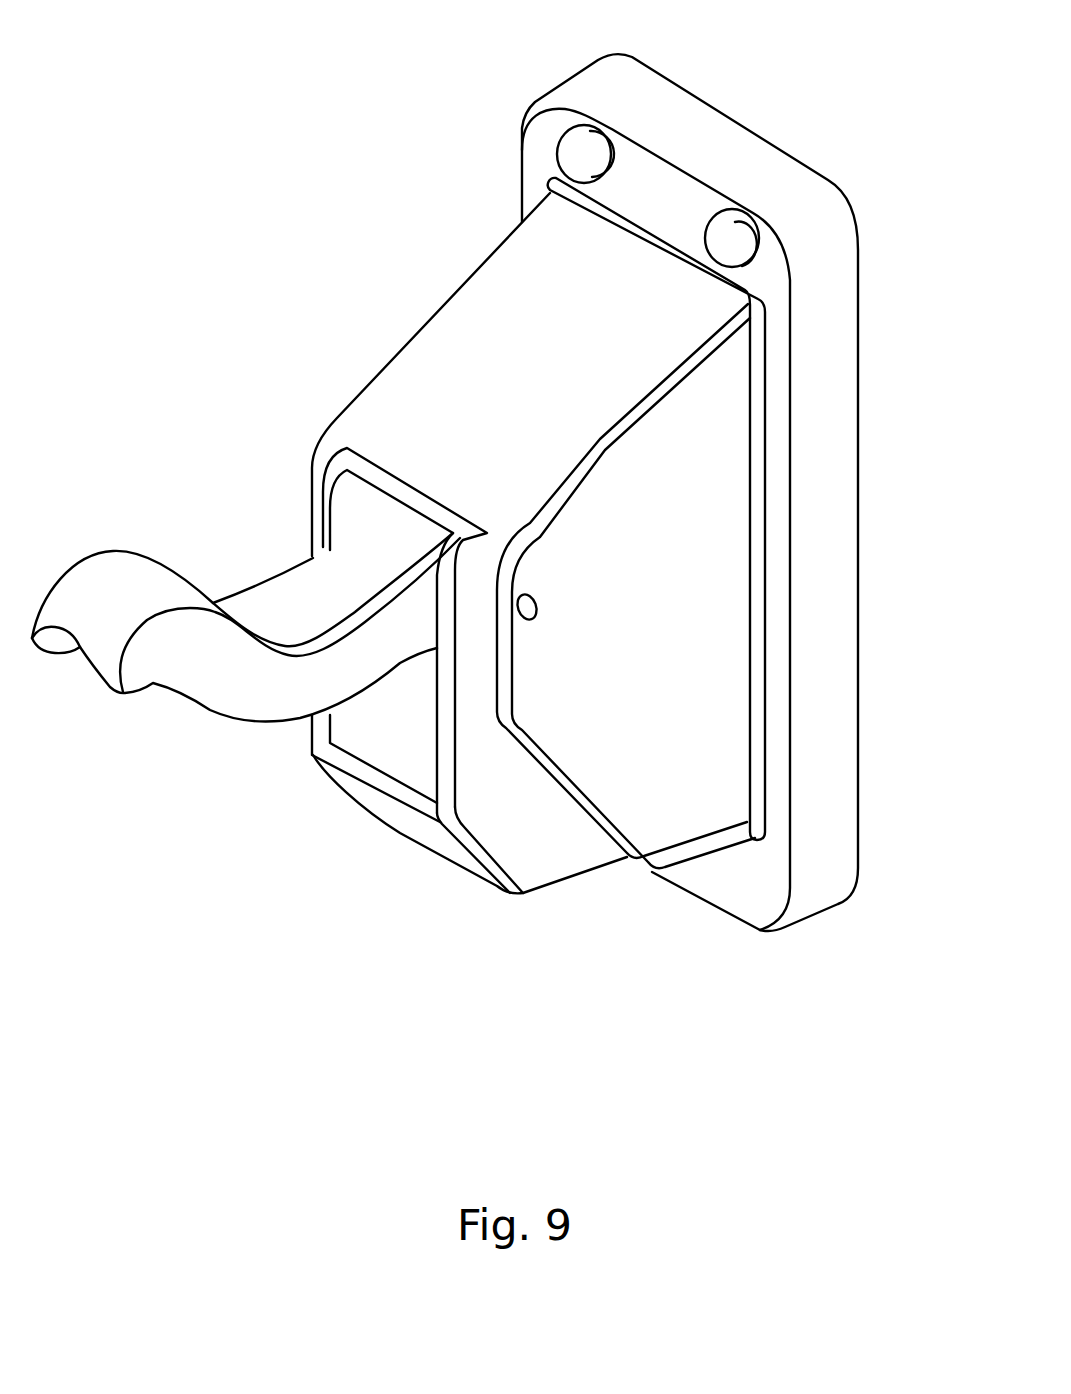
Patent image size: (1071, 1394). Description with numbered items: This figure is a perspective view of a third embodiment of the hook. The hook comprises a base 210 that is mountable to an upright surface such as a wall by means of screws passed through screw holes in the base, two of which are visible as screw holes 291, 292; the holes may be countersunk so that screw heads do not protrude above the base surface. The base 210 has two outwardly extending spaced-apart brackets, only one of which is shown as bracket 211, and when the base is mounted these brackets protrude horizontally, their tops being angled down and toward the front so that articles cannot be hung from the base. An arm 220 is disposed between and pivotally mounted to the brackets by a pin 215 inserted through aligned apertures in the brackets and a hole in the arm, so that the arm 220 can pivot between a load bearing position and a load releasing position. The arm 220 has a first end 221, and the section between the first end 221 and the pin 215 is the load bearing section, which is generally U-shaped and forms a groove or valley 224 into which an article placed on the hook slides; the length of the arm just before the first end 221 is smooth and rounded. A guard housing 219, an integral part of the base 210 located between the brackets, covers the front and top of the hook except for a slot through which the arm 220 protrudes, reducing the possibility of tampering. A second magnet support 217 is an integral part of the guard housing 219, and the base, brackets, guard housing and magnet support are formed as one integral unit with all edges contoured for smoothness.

The base 210 is at (628, 87).
The bracket 211 is at (679, 606).
The pin 215 is at (522, 611).
The second magnet support 217 is at (403, 823).
The guard housing 219 is at (532, 398).
The arm 220 is at (221, 688).
The first end 221 is at (110, 588).
The valley 224 is at (270, 610).
The screw hole 291 is at (745, 233).
The screw hole 292 is at (587, 147).